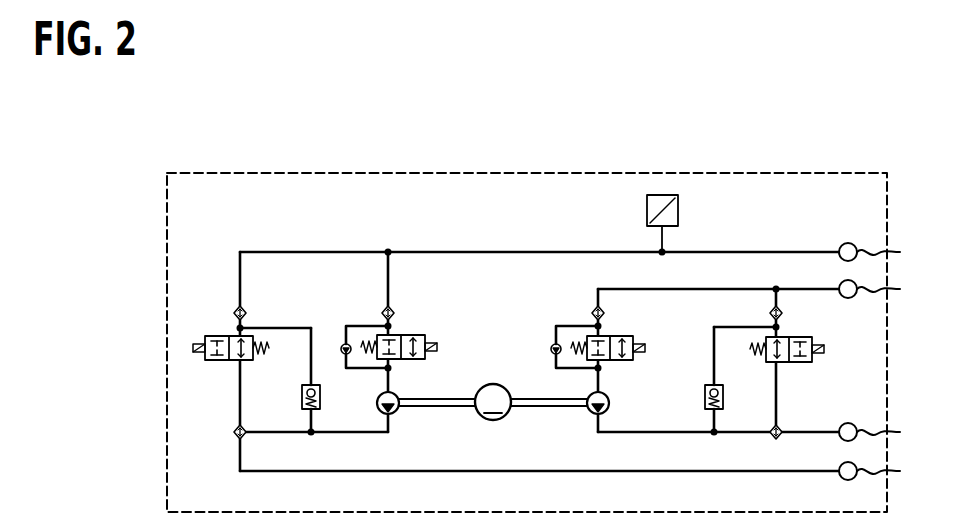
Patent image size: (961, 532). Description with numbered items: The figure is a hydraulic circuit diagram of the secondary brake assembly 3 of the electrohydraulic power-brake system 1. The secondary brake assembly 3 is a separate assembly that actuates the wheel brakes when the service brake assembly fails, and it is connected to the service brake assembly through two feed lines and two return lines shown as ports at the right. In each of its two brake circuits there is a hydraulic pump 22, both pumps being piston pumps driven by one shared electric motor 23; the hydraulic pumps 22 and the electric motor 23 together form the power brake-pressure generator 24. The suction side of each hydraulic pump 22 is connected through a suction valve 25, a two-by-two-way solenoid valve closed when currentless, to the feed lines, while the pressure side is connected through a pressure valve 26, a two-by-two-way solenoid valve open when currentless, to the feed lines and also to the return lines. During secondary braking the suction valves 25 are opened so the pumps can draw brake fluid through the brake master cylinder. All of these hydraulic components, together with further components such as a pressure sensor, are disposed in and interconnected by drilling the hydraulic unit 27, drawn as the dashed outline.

The power-brake system 1 is at (555, 274).
The secondary brake assembly 3 is at (555, 314).
The hydraulic pump 22 is at (396, 414).
The electric motor 23 is at (491, 383).
The power brake-pressure generator 24 is at (594, 416).
The suction valve 25 is at (426, 336).
The pressure valve 26 is at (210, 361).
The hydraulic unit 27 is at (441, 172).